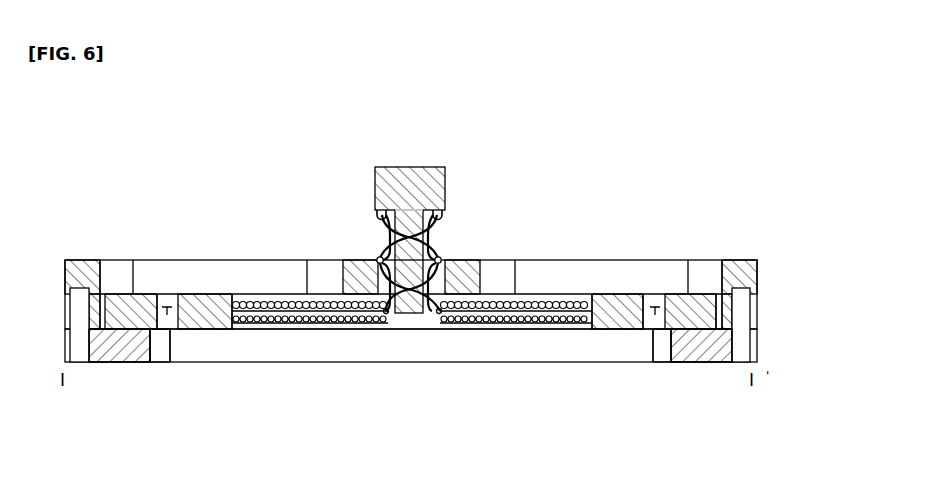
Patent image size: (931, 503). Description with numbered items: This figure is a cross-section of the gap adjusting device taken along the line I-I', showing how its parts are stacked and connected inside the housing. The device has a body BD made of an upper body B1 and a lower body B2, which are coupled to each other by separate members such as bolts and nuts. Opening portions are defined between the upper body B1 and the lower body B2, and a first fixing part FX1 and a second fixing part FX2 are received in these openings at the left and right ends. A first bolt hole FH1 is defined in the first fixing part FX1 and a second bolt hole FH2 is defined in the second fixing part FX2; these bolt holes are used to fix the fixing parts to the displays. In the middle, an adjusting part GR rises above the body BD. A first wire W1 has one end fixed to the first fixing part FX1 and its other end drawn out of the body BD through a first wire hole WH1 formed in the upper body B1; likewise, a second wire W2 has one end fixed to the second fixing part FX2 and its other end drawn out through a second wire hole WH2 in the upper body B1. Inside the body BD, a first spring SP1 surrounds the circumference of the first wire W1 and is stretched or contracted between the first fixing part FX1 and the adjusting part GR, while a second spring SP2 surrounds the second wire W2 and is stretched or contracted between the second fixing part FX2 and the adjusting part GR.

The adjusting part GR is at (410, 167).
The first wire W1 is at (377, 220).
The second wire W2 is at (442, 227).
The first wire hole WH1 is at (378, 256).
The second wire hole WH2 is at (442, 259).
The upper body B1 is at (755, 272).
The lower body B2 is at (755, 345).
The body BD is at (455, 311).
The first fixing part FX1 is at (145, 340).
The second fixing part FX2 is at (688, 340).
The first bolt hole FH1 is at (163, 315).
The second bolt hole FH2 is at (655, 315).
The first spring SP1 is at (272, 325).
The second spring SP2 is at (492, 325).